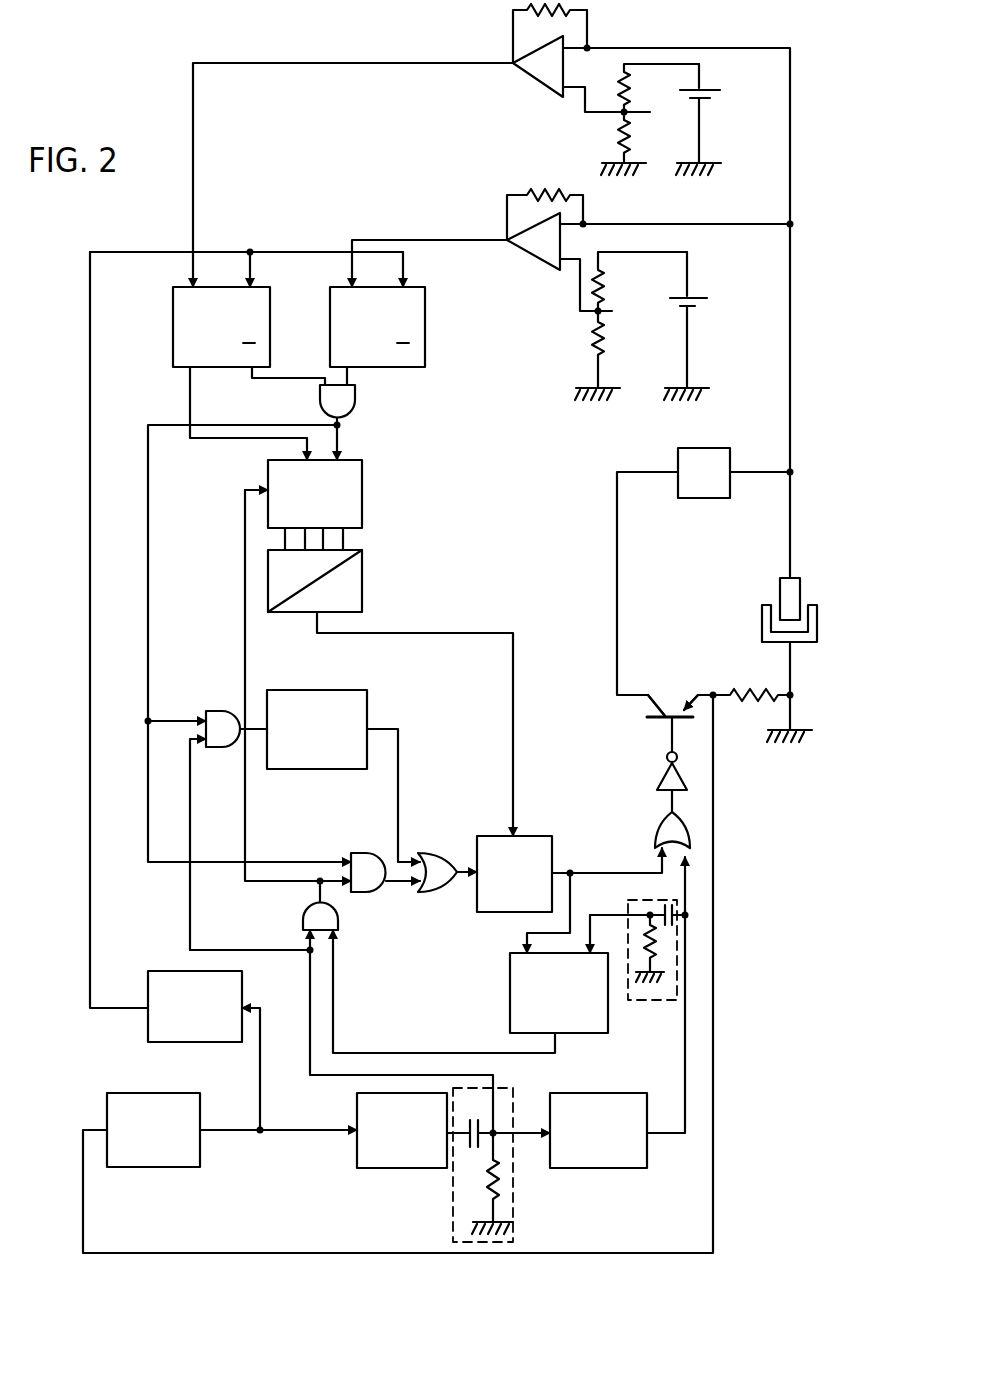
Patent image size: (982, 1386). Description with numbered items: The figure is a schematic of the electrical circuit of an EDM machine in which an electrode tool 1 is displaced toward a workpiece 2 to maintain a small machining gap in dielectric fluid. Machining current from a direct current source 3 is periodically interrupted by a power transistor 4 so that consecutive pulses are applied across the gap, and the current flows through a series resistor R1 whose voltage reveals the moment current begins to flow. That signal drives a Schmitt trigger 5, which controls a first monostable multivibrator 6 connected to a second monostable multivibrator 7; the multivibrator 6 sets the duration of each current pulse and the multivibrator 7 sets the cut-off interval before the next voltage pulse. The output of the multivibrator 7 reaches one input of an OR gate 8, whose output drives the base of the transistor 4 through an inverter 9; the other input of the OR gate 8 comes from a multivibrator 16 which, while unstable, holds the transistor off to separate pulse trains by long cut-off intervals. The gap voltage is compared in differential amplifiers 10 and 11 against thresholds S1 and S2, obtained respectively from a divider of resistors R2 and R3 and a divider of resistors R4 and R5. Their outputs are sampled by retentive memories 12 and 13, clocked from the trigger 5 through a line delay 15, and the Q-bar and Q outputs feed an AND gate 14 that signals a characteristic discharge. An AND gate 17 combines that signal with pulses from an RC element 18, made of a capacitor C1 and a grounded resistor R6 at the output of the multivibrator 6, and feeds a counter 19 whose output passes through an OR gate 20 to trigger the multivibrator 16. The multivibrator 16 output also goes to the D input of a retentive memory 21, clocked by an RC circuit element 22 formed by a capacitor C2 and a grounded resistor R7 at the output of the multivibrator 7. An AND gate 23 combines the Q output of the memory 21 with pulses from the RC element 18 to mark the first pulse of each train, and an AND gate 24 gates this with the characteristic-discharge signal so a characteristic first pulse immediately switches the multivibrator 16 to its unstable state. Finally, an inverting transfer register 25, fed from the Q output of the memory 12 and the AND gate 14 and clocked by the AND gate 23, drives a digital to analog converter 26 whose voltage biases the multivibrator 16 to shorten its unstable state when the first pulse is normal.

The electrode tool 1 is at (780, 590).
The workpiece 2 is at (762, 625).
The source of direct current 3 is at (705, 455).
The power transistor 4 is at (655, 728).
The Schmitt trigger 5 is at (158, 1167).
The first monostable multivibrator 6 is at (375, 1168).
The second monostable multivibrator 7 is at (632, 1168).
The OR gate 8 is at (656, 834).
The inverter 9 is at (658, 781).
The differential amplifier 10 is at (552, 82).
The differential amplifier 11 is at (550, 258).
The retentive memory 12 is at (173, 326).
The retentive memory 13 is at (425, 325).
The AND gate 14 is at (350, 408).
The line delay 15 is at (158, 971).
The multivibrator 16 is at (530, 834).
The AND gate 17 is at (226, 750).
The RC element 18 is at (511, 1122).
The counter 19 is at (367, 697).
The OR gate 20 is at (440, 855).
The retentive memory 21 is at (510, 1005).
The RC circuit element 22 is at (626, 936).
The AND gate 23 is at (338, 918).
The AND gate 24 is at (370, 850).
The inverting transfer register 25 is at (362, 490).
The digital to analog converter 26 is at (362, 580).
The resistor R1 is at (770, 672).
The resistor R2 is at (620, 85).
The resistor R3 is at (616, 144).
The resistor R4 is at (606, 282).
The resistor R5 is at (592, 342).
The grounded resistor R6 is at (498, 1185).
The grounded resistor R7 is at (655, 950).
The capacitor C1 is at (470, 1126).
The capacitor C2 is at (676, 906).
The voltage threshold S1 is at (638, 112).
The voltage threshold S2 is at (612, 311).